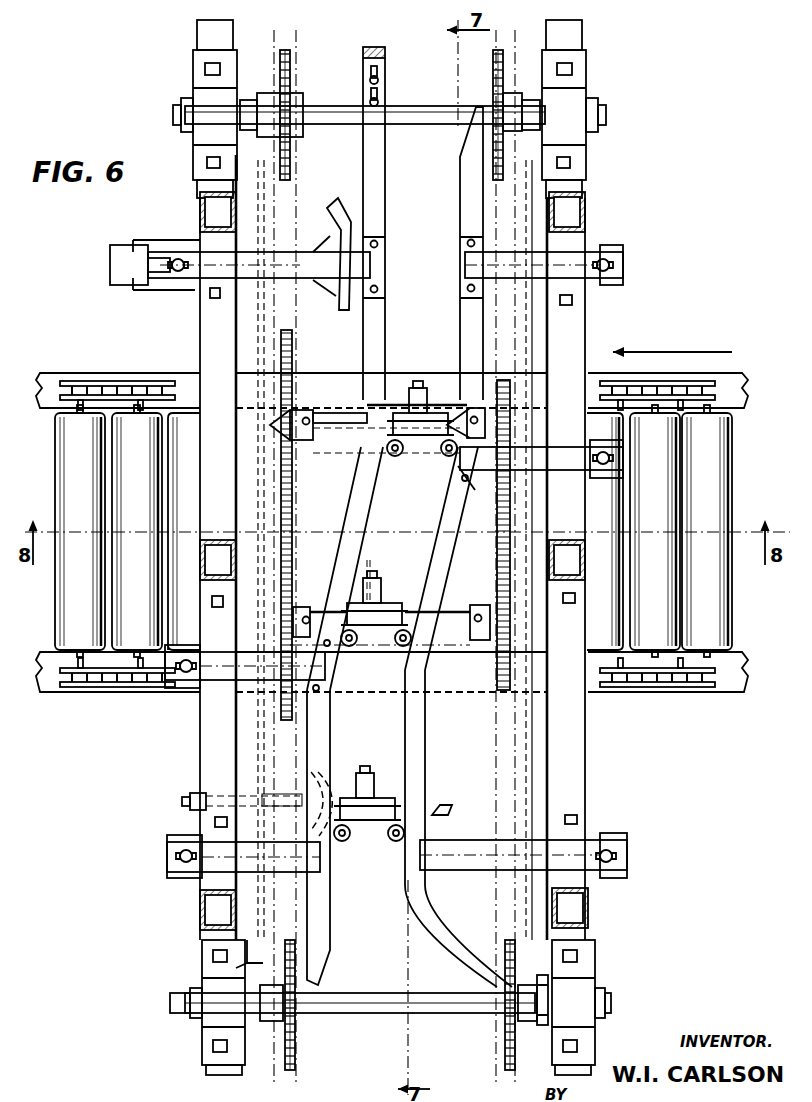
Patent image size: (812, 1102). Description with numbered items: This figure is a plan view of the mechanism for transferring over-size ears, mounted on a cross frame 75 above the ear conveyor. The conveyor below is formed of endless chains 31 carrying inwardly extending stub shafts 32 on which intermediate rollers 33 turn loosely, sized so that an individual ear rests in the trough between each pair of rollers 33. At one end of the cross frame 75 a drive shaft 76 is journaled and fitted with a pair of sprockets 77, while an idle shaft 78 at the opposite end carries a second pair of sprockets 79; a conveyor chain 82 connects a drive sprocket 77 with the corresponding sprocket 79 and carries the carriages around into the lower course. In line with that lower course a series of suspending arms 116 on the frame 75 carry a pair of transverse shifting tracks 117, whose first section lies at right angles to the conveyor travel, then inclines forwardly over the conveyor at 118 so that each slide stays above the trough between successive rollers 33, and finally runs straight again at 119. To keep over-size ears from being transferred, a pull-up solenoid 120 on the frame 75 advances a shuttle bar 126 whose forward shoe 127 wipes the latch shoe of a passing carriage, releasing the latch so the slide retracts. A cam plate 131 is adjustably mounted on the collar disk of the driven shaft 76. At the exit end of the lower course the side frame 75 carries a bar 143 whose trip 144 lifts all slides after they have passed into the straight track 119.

The endless chain 31 is at (128, 392).
The stub shaft 32 is at (52, 390).
The intermediate roller 33 is at (70, 475).
The cross frame 75 is at (575, 785).
The drive shaft 76 is at (346, 1006).
The sprocket 77 is at (292, 1071).
The idle shaft 78 is at (470, 112).
The sprocket 79 is at (284, 75).
The conveyor chain 82 is at (292, 358).
The suspending arm 116 is at (470, 262).
The shifting track 117 is at (468, 331).
The inclined track section 118 is at (452, 524).
The straight track section 119 is at (410, 748).
The pull-up solenoid 120 is at (116, 266).
The shuttle bar 126 is at (160, 260).
The shoe 127 is at (333, 208).
The cam plate 131 is at (556, 986).
The bar 143 is at (290, 794).
The trip 144 is at (300, 790).